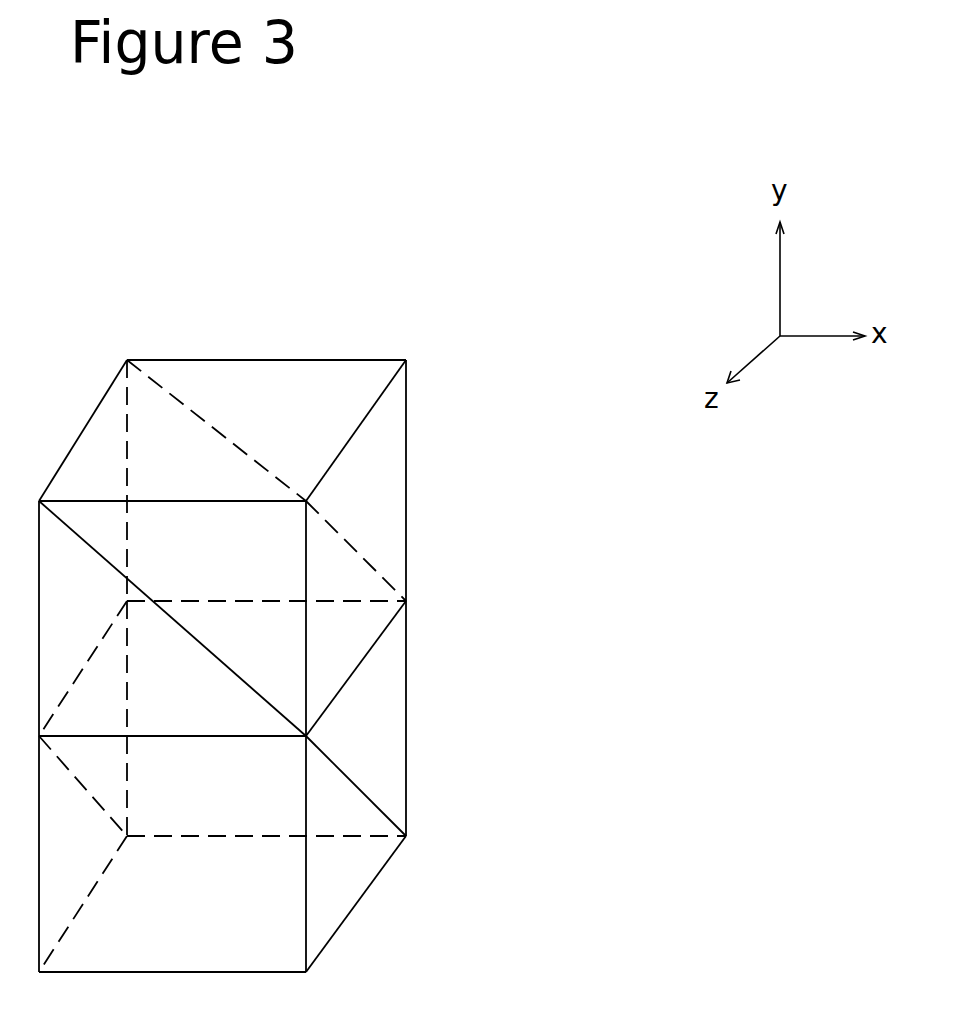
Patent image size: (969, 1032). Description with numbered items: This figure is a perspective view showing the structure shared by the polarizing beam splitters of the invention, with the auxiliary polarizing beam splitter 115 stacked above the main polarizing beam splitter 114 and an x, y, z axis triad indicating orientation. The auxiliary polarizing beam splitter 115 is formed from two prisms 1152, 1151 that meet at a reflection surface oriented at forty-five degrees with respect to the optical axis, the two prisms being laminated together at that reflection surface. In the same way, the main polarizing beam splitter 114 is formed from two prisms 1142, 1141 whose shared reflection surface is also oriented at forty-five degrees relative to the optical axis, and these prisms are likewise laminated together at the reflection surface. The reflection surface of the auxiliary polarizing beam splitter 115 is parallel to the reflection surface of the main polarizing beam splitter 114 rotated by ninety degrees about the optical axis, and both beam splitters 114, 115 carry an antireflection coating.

The main polarizing beam splitter 114 is at (568, 682).
The prism 1141 is at (390, 720).
The prism 1142 is at (380, 878).
The auxiliary polarizing beam splitter 115 is at (360, 280).
The prism 1151 is at (263, 383).
The prism 1152 is at (47, 557).